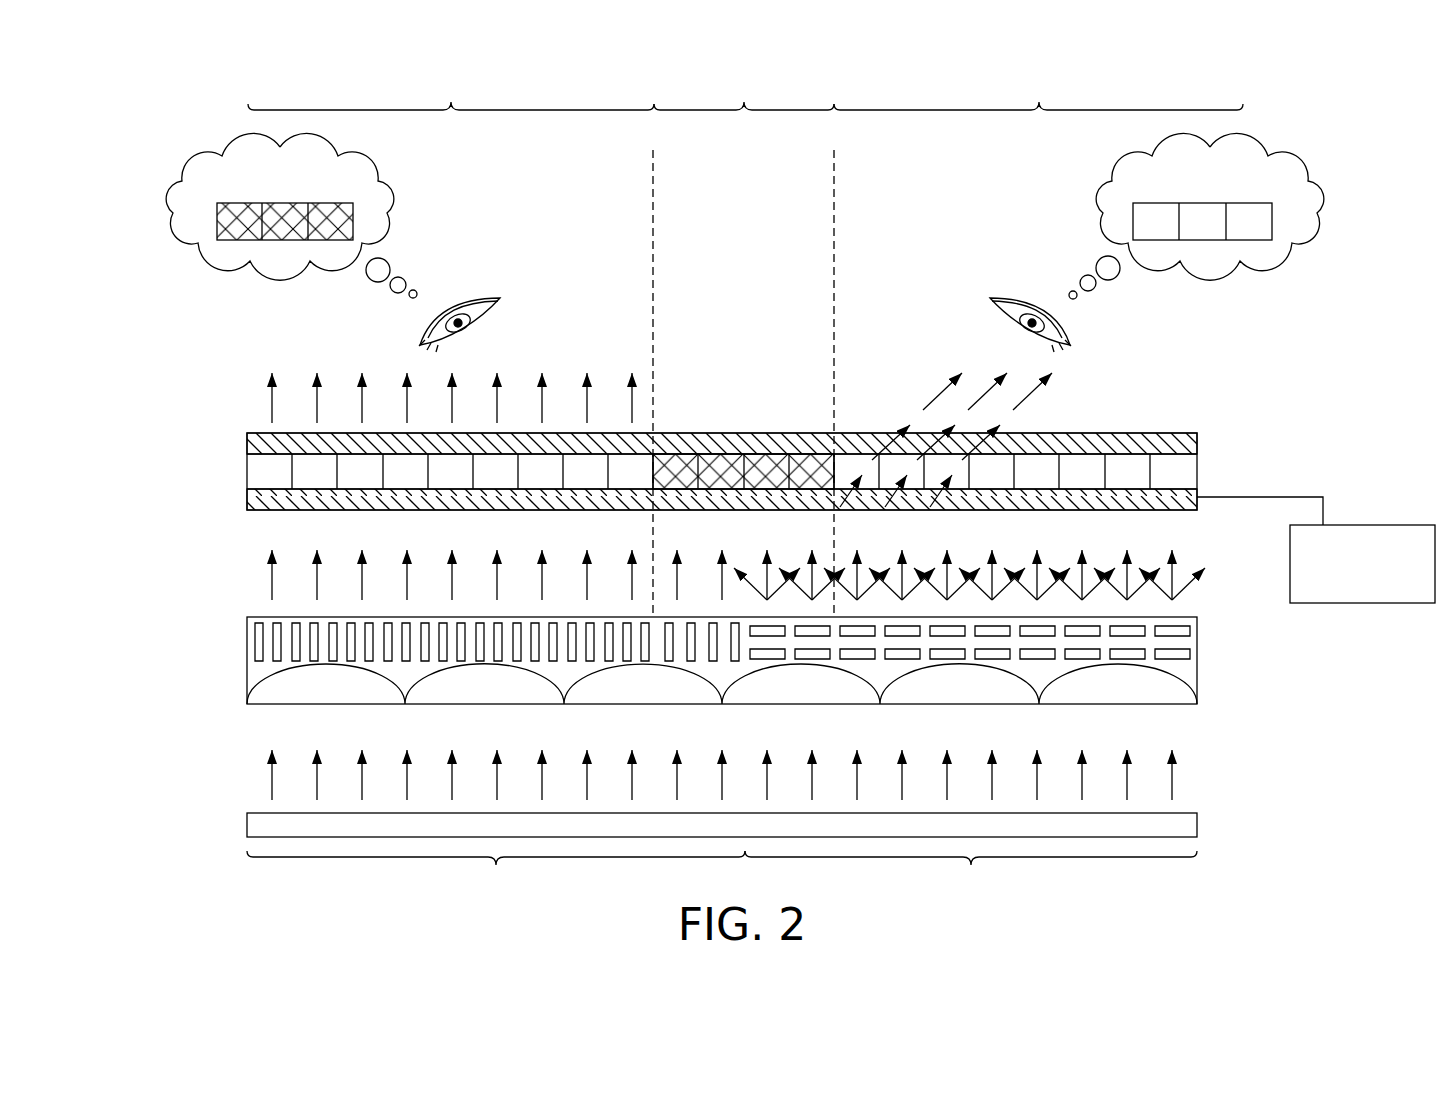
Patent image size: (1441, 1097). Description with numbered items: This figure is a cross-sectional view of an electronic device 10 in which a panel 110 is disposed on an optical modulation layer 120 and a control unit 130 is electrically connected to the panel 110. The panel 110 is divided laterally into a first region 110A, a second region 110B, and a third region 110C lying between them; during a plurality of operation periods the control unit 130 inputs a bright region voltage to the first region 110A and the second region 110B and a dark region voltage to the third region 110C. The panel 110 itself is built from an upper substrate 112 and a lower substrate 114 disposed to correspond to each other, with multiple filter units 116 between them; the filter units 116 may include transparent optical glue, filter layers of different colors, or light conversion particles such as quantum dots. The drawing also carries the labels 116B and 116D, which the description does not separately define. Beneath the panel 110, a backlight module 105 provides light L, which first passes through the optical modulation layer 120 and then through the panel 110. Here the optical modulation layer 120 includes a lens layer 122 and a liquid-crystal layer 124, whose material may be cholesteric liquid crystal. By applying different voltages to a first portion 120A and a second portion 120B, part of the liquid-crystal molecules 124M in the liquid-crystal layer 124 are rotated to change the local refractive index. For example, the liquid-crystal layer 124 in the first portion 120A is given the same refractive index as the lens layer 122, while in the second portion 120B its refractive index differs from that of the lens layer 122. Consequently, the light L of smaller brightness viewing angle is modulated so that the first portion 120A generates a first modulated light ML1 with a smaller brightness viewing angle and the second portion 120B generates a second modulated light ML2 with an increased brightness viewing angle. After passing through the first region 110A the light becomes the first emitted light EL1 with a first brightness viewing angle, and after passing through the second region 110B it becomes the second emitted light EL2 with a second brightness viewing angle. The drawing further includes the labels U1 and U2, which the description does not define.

The electronic device 10 is at (113, 88).
The backlight module 105 is at (247, 826).
The panel 110 is at (222, 467).
The first region 110A is at (451, 86).
The second region 110B is at (1038, 86).
The third region 110C is at (743, 339).
The upper substrate 112 is at (1186, 446).
The lower substrate 114 is at (1186, 501).
The filter units 116 is at (1353, 303).
The bright (transmissive) pixels 116B is at (1182, 471).
The dark (blocking) pixels 116D is at (762, 468).
The optical modulation layer 120 is at (222, 656).
The first portion 120A is at (496, 877).
The second portion 120B is at (971, 877).
The lens layer 122 is at (1170, 696).
The liquid-crystal layer 124 is at (1182, 664).
The liquid-crystal molecules 124M is at (258, 640).
The control unit 130 is at (1340, 581).
The first emitted light EL1 is at (417, 398).
The second emitted light EL2 is at (946, 439).
The first modulated light ML1 is at (458, 575).
The second modulated light ML2 is at (1002, 575).
The light L is at (738, 776).
The first user U1 is at (362, 242).
The second user U2 is at (1157, 242).